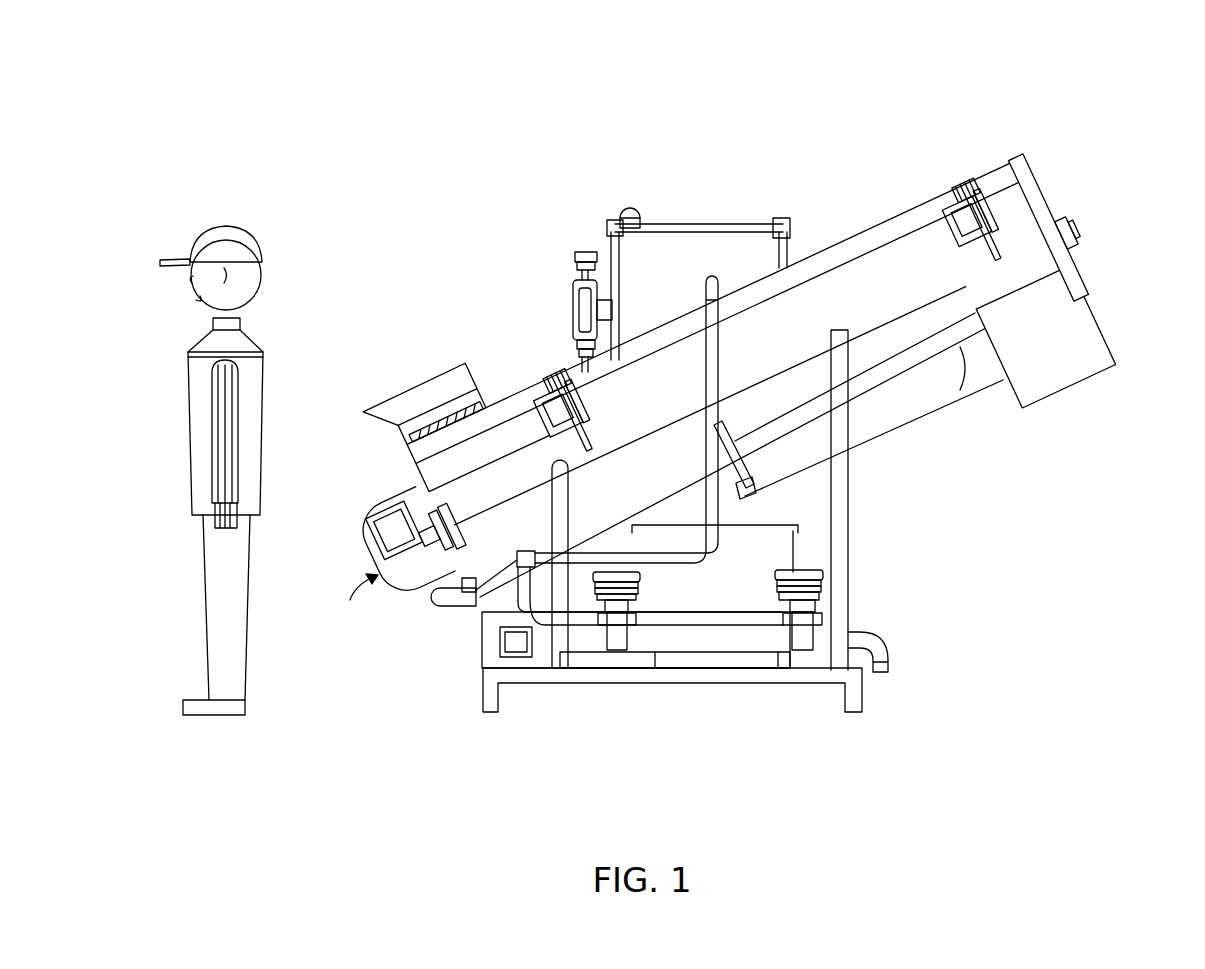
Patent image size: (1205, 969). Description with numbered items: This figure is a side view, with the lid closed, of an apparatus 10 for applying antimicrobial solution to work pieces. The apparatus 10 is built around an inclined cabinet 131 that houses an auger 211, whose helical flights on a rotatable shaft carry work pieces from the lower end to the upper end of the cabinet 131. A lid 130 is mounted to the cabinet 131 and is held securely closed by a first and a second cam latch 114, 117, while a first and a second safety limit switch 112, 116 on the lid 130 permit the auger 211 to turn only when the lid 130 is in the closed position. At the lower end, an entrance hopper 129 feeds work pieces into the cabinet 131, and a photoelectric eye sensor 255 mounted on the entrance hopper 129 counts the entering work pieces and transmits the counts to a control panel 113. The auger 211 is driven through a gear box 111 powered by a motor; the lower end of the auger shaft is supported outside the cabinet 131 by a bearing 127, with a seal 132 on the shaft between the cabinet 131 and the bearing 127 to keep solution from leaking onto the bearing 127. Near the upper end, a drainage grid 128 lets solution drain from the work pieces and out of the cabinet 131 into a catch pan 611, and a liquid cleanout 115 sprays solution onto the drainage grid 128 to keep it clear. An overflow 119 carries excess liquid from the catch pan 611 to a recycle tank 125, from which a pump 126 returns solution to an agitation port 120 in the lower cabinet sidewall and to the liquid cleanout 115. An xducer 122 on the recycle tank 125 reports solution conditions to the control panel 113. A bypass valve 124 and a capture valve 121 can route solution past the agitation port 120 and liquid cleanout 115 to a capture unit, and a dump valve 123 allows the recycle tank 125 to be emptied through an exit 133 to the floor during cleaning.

The apparatus 10 is at (168, 92).
The gear box 111 is at (351, 603).
The safety limit switch 112 is at (540, 385).
The control panel 113 is at (760, 240).
The cam latch 114 is at (560, 383).
The liquid cleanout 115 is at (712, 275).
The safety limit switch 116 is at (955, 215).
The cam latch 117 is at (975, 190).
The overflow 119 is at (756, 494).
The agitation port 120 is at (484, 592).
The capture valve 121 is at (812, 588).
The xducer 122 is at (800, 628).
The dump valve 123 is at (825, 638).
The bypass valve 124 is at (603, 610).
The recycle tank 125 is at (708, 636).
The pump 126 is at (487, 670).
The bearing 127 is at (430, 500).
The drainage grid 128 is at (957, 340).
The entrance hopper 129 is at (433, 375).
The lid 130 is at (848, 250).
The cabinet 131 is at (1025, 205).
The seal 132 is at (412, 548).
The exit 133 is at (882, 680).
The auger 211 is at (1078, 236).
The photoelectric eye sensor 255 is at (445, 440).
The catch pan 611 is at (907, 410).